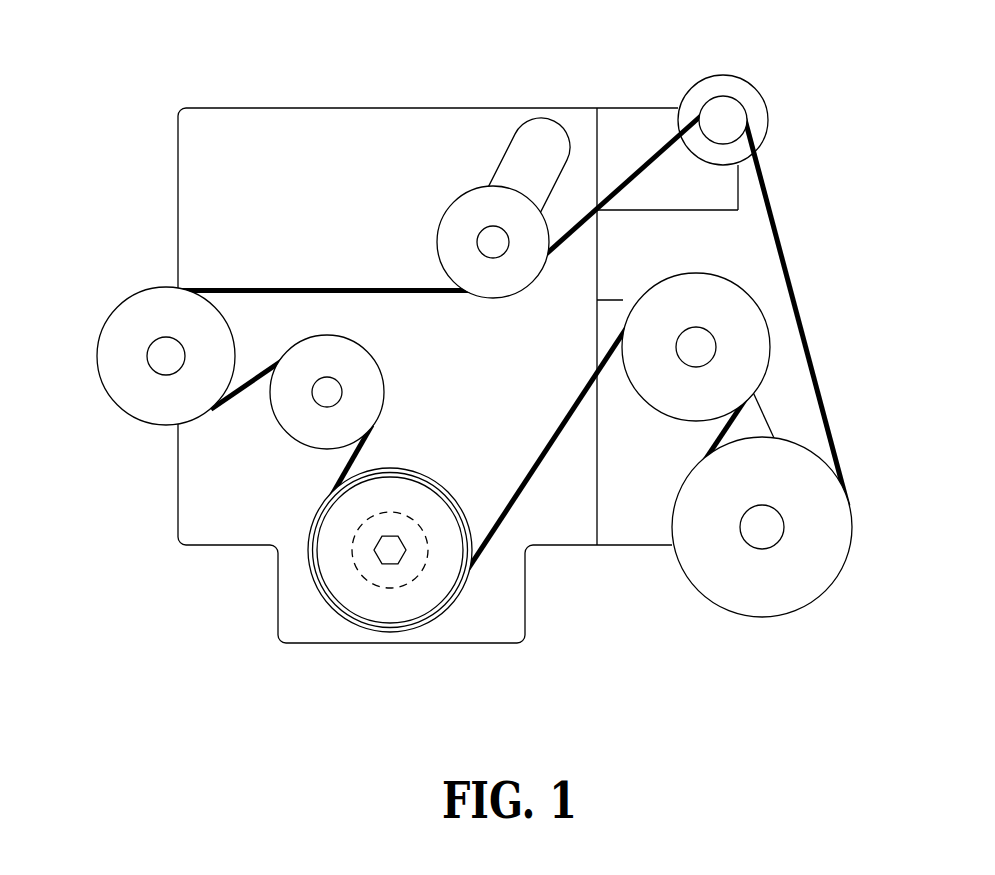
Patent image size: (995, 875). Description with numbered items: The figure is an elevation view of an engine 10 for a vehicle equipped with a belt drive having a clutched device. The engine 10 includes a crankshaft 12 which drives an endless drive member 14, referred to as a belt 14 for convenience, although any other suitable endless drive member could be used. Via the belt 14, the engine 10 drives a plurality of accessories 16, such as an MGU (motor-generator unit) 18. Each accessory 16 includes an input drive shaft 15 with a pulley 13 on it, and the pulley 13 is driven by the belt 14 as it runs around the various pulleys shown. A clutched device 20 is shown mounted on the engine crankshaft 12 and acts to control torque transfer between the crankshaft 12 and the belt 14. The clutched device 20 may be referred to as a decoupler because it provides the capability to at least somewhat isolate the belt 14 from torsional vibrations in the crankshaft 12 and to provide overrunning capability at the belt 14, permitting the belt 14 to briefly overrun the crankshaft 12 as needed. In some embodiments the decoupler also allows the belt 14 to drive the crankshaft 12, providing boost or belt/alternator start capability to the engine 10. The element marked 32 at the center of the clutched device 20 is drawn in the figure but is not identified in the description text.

The engine 10 is at (293, 567).
The crankshaft 12 is at (395, 587).
The pulley 13 is at (143, 403).
The endless drive member 14 is at (223, 285).
The input drive shaft 15 is at (118, 335).
The accessory 16 is at (449, 487).
The MGU (motor-generator unit) 18 is at (707, 88).
The clutched device 20 is at (437, 585).
The fastener 32 is at (383, 557).